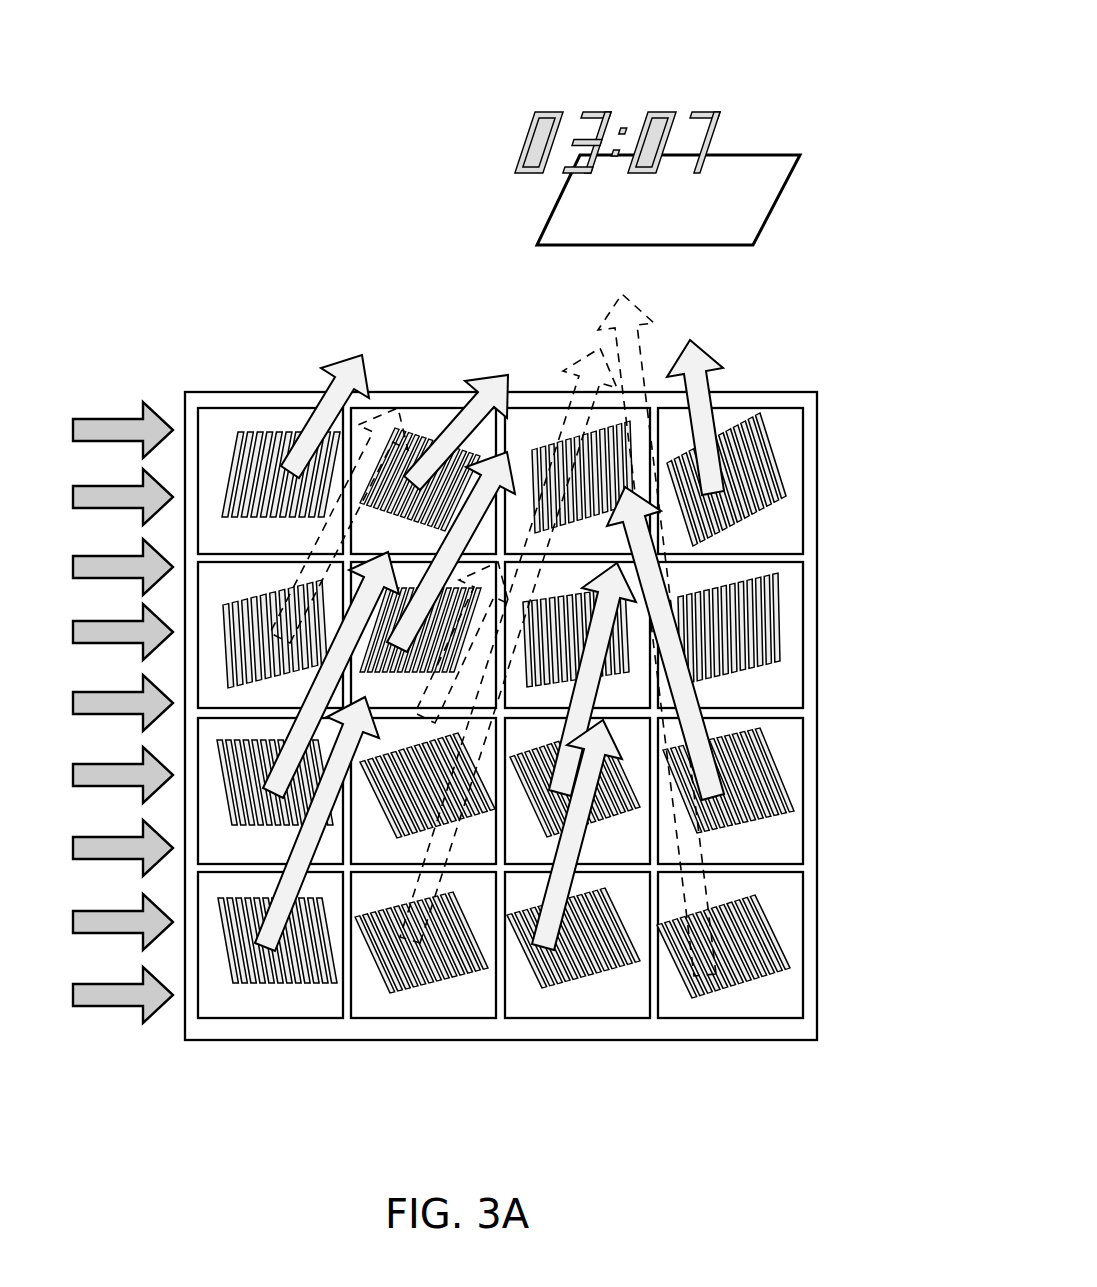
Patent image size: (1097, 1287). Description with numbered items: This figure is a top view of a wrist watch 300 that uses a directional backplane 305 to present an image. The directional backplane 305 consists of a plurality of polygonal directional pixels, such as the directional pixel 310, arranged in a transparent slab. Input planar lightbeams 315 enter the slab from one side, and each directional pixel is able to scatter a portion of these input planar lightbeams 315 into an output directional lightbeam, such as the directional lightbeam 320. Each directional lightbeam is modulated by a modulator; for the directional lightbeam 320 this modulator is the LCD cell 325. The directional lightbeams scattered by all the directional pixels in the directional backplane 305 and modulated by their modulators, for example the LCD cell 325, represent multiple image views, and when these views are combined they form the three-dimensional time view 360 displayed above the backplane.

The wrist watch 300 is at (476, 226).
The directional backplane 305 is at (753, 402).
The directional pixel 310 is at (248, 458).
The input planar lightbeams 315 is at (92, 418).
The directional lightbeam 320 is at (363, 357).
The LCD cell 325 is at (298, 420).
The 3D time view 360 is at (712, 105).